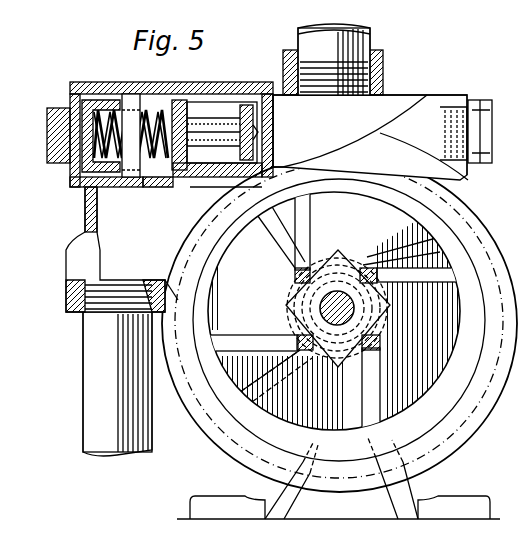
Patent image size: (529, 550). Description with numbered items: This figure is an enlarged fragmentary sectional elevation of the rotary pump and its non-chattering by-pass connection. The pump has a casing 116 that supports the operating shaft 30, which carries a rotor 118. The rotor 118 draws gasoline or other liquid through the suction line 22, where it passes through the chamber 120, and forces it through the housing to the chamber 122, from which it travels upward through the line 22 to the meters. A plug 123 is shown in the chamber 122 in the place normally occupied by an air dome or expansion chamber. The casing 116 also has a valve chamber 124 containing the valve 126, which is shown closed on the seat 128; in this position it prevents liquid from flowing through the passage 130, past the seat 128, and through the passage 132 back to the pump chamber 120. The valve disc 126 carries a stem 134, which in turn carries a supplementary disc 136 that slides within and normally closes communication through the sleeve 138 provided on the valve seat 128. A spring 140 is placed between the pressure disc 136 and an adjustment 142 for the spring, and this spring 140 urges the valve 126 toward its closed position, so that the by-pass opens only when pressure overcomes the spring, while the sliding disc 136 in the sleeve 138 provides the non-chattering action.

The suction line 22 is at (372, 43).
The operating shaft 30 is at (342, 308).
The casing 116 is at (410, 465).
The rotor 118 is at (400, 415).
The chamber 120 is at (103, 250).
The chamber 122 is at (390, 103).
The plug 123 is at (488, 135).
The valve chamber 124 is at (154, 100).
The valve 126 is at (228, 108).
The seat 128 is at (256, 108).
The passage 130 is at (270, 120).
The passage 132 is at (150, 188).
The stem 134 is at (200, 179).
The supplementary disc 136 is at (163, 190).
The sleeve 138 is at (203, 190).
The spring 140 is at (122, 110).
The adjustment 142 is at (88, 152).